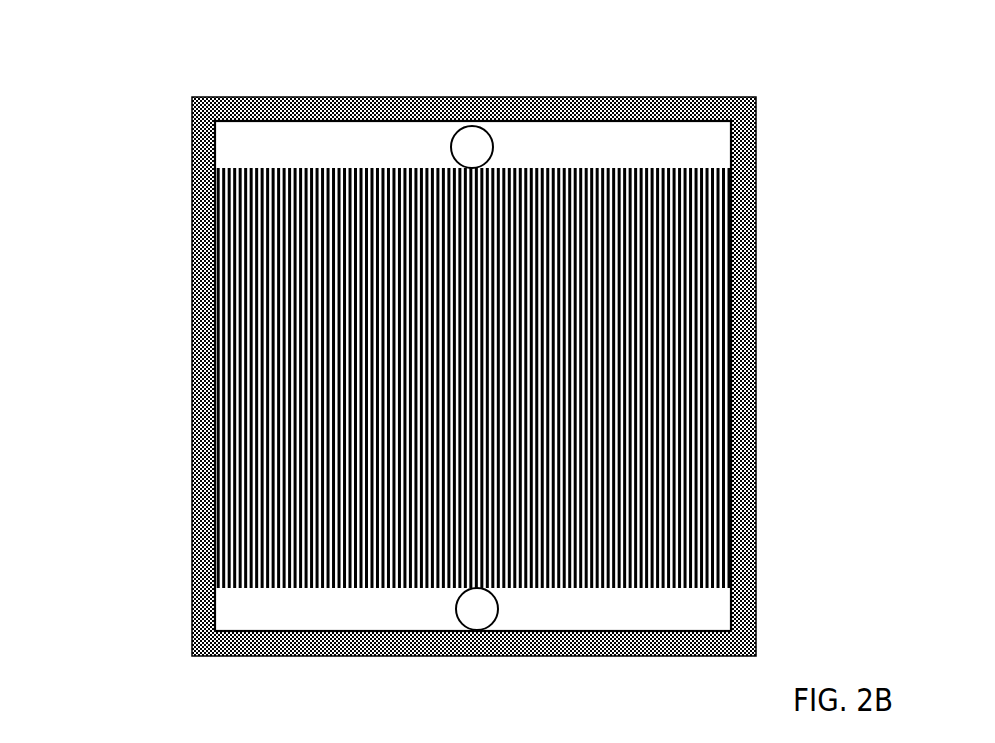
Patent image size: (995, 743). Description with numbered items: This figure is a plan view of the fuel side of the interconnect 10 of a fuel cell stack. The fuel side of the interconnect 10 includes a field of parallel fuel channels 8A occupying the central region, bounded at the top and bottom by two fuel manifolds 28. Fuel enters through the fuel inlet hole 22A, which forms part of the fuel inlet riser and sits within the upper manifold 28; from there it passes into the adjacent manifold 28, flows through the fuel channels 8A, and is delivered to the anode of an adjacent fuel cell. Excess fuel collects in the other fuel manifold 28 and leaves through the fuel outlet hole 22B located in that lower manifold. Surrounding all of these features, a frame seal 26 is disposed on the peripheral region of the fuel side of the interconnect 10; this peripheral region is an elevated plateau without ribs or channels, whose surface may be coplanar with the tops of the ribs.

The interconnect 10 is at (146, 223).
The frame seal 26 is at (757, 376).
The fuel manifold 28 is at (732, 145).
The fuel channels 8A is at (682, 441).
The fuel inlet hole 22A is at (483, 126).
The fuel outlet hole 22B is at (475, 630).